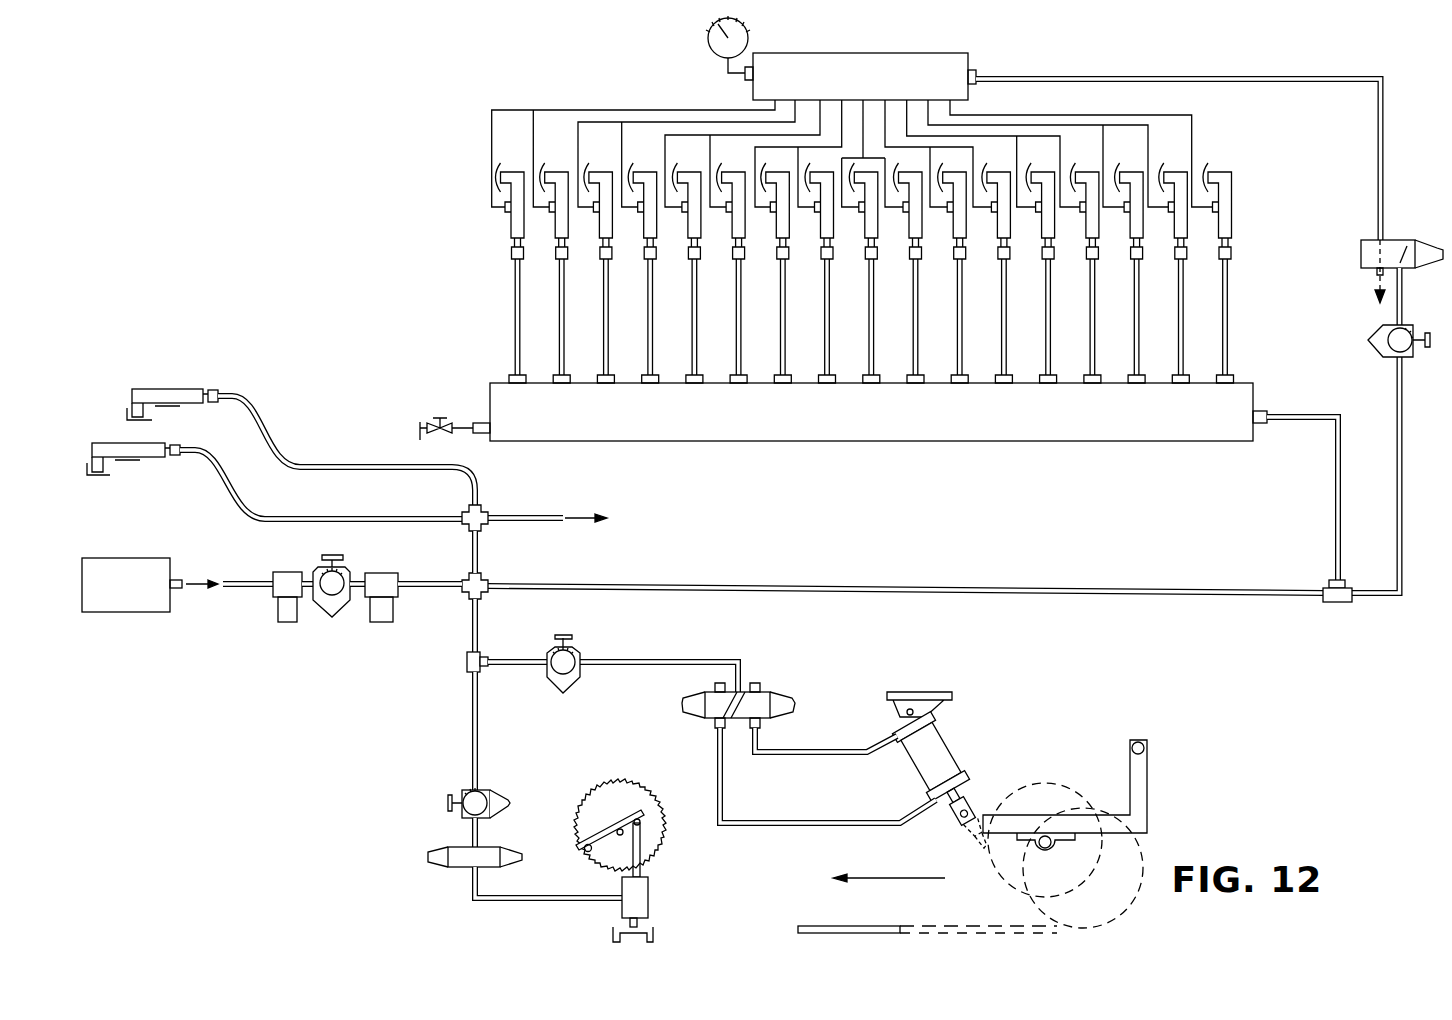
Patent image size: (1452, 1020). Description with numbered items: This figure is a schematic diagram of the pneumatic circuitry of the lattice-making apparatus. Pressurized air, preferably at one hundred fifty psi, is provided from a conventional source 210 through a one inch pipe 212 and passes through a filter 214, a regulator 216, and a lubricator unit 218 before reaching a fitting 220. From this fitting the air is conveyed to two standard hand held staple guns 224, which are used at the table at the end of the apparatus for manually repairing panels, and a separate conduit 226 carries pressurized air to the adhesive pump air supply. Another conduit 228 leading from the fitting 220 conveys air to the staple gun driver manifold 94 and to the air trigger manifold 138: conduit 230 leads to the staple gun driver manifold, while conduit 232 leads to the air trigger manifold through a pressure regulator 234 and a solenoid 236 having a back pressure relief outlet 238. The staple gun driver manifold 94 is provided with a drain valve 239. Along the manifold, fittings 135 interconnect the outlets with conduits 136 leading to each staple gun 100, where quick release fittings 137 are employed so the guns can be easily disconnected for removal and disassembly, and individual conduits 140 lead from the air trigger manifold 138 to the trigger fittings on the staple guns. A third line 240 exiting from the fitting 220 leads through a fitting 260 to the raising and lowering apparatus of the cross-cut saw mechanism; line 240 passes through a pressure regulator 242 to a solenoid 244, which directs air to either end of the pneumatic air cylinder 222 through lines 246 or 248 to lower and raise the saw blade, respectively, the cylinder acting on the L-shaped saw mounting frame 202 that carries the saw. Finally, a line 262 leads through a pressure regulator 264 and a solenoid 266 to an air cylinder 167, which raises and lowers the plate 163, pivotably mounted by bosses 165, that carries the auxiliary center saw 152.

The staple gun driver manifold 94 is at (1078, 432).
The staple gun 100 is at (508, 233).
The fitting 135 is at (506, 377).
The conduit 136 is at (512, 300).
The quick release fitting 137 is at (507, 258).
The air trigger manifold 138 is at (955, 53).
The conduit 140 is at (1063, 117).
The auxiliary center saw 152 is at (647, 793).
The plate 163 is at (603, 827).
The bosses 165 is at (587, 851).
The air cylinder 167 is at (655, 898).
The L-shaped saw mounting frame 202 is at (1150, 776).
The source 210 is at (143, 612).
The pipe 212 is at (246, 590).
The filter 214 is at (284, 623).
The regulator 216 is at (333, 618).
The lubricator unit 218 is at (383, 623).
The fitting 220 is at (487, 583).
The pneumatic air cylinder 222 is at (468, 553).
The hand held staple guns 224 is at (155, 388).
The conduit 226 is at (535, 514).
The conduit 228 is at (662, 597).
The conduit 230 is at (1334, 507).
The conduit 232 is at (1396, 452).
The pressure regulator 234 is at (1368, 342).
The solenoid 236 is at (1358, 253).
The back pressure relief outlet 238 is at (1375, 278).
The drain valve 239 is at (432, 432).
The line 240 is at (520, 667).
The pressure regulator 242 is at (573, 691).
The solenoid 244 is at (787, 695).
The line 246 is at (818, 745).
The line 248 is at (828, 818).
The fitting 260 is at (467, 668).
The line 262 is at (472, 745).
The pressure regulator 264 is at (467, 818).
The solenoid 266 is at (440, 868).